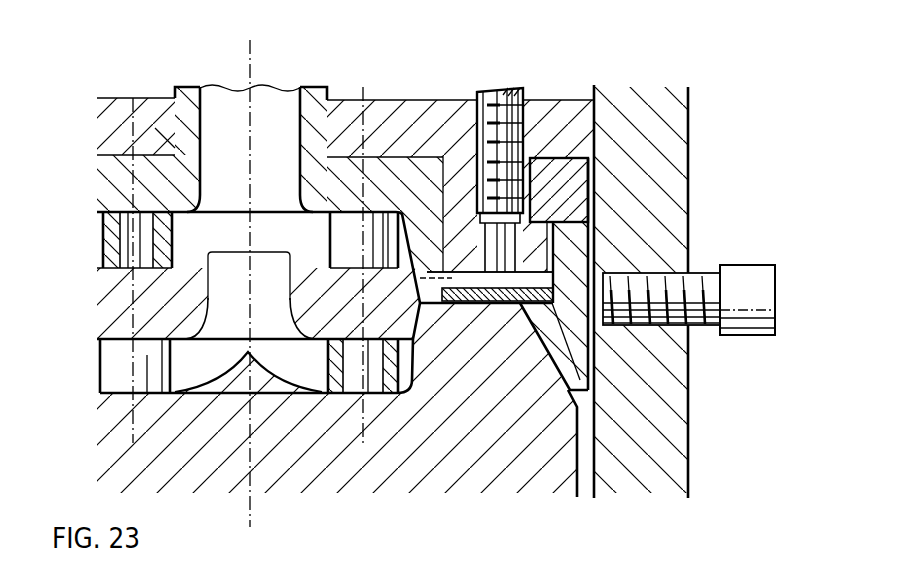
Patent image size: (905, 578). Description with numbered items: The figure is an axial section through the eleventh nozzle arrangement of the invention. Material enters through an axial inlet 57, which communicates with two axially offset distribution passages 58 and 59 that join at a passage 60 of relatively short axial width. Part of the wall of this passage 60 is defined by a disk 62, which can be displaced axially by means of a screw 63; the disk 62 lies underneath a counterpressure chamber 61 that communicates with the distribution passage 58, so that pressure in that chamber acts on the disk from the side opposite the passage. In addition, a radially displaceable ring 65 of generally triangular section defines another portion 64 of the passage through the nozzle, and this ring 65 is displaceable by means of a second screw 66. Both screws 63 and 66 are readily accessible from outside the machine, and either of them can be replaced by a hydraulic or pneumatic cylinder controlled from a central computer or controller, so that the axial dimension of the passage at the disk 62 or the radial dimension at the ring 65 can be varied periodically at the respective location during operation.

The axial inlet 57 is at (222, 127).
The distribution passage 58 is at (280, 232).
The distribution passage 59 is at (305, 367).
The passage 60 is at (439, 303).
The counterpressure chamber 61 is at (524, 286).
The disk 62 is at (507, 302).
The screw 63 is at (490, 117).
The passage portion 64 is at (560, 368).
The triangular-section ring 65 is at (577, 350).
The screw 66 is at (748, 278).